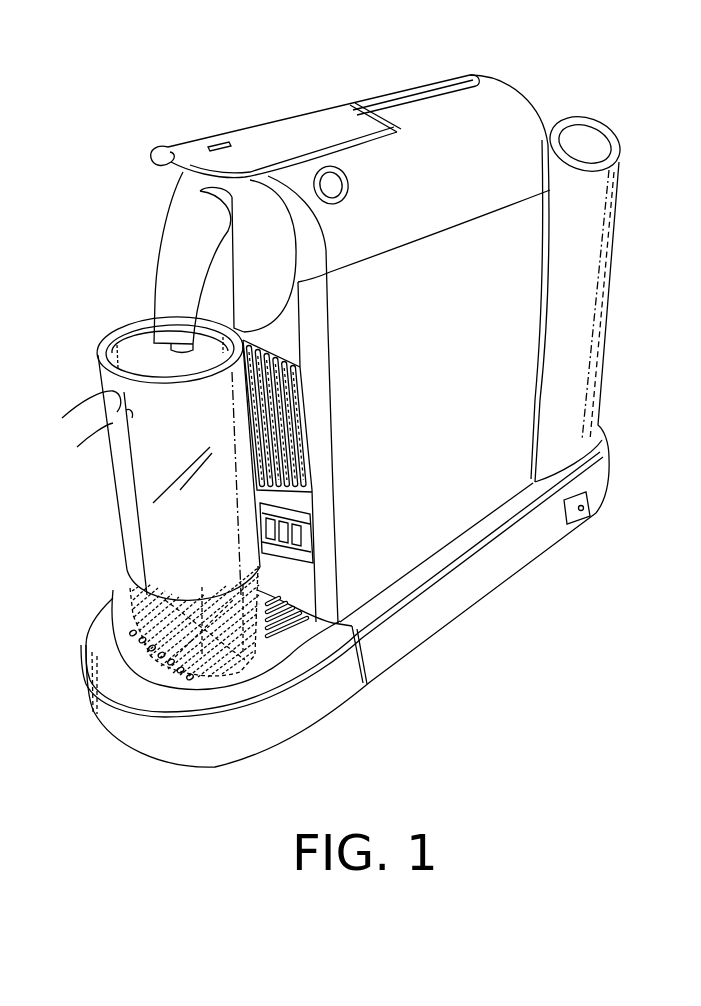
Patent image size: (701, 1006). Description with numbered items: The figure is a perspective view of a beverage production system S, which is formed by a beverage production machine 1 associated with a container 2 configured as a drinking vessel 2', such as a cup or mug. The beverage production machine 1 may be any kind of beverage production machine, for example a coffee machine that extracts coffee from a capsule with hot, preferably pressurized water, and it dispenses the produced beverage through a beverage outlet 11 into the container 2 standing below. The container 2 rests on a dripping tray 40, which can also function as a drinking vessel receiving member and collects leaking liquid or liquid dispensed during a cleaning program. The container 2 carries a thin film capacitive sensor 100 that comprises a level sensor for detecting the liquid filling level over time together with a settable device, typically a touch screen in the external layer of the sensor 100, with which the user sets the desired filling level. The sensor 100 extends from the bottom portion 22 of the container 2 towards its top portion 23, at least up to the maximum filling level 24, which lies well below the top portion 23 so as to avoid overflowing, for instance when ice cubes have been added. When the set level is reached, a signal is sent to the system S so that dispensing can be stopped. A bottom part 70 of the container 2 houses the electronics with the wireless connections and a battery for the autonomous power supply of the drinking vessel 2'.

The beverage production system S is at (122, 116).
The beverage production machine 1 is at (437, 97).
The container 2 is at (148, 426).
The drinking vessel 2' is at (151, 426).
The thin film capacitive sensor 100 is at (133, 488).
The beverage outlet 11 is at (101, 338).
The bottom portion 22 is at (125, 575).
The top portion 23 is at (133, 322).
The maximum filling level 24 is at (111, 452).
The dripping tray 40 is at (237, 675).
The bottom part 70 is at (158, 628).